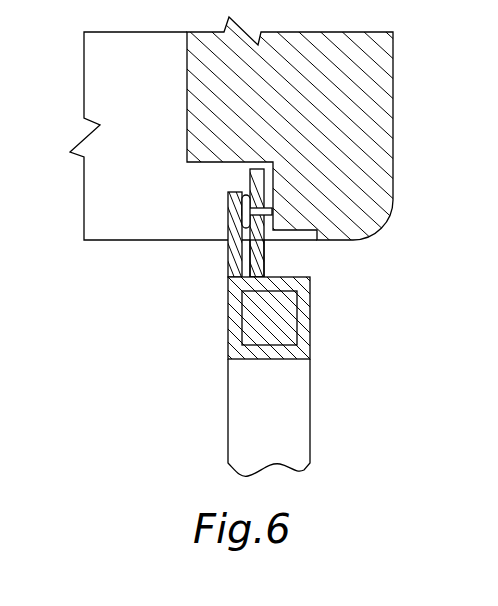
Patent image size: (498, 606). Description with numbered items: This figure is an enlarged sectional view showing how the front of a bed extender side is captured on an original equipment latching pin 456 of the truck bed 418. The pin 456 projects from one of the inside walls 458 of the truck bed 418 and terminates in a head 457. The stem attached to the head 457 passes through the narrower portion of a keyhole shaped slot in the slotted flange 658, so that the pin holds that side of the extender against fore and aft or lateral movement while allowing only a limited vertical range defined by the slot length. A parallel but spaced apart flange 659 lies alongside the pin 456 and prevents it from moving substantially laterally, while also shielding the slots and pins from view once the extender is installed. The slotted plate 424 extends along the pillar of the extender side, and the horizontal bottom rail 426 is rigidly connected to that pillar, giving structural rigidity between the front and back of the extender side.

The truck bed 418 is at (98, 47).
The inside walls of the truck bed 458 is at (187, 94).
The original equipment latching pin 456 is at (256, 204).
The head of the latching pin 457 is at (246, 212).
The flange 659 is at (228, 220).
The flange 658 is at (264, 264).
The plate 424 is at (228, 318).
The bottom rail 426 is at (236, 412).